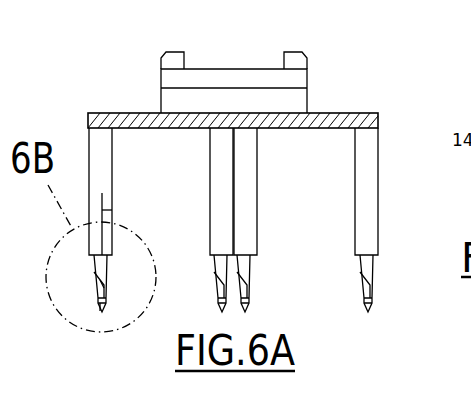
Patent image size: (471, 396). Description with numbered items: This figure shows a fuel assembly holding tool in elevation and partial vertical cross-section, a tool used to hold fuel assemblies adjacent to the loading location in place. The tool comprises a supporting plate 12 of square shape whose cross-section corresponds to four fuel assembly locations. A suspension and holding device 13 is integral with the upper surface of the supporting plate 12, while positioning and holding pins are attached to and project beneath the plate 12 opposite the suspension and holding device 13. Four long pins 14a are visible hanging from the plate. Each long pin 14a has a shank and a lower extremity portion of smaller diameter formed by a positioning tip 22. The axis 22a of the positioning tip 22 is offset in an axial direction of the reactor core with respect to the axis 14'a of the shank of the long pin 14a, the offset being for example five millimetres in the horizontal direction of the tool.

The supporting plate 12 is at (340, 122).
The suspension and holding device 13 is at (259, 77).
The long pin 14a is at (100, 295).
The axis of the shank of the long pin 14'a is at (129, 211).
The positioning tip 22 is at (101, 310).
The axis of the positioning tip 22a is at (107, 283).